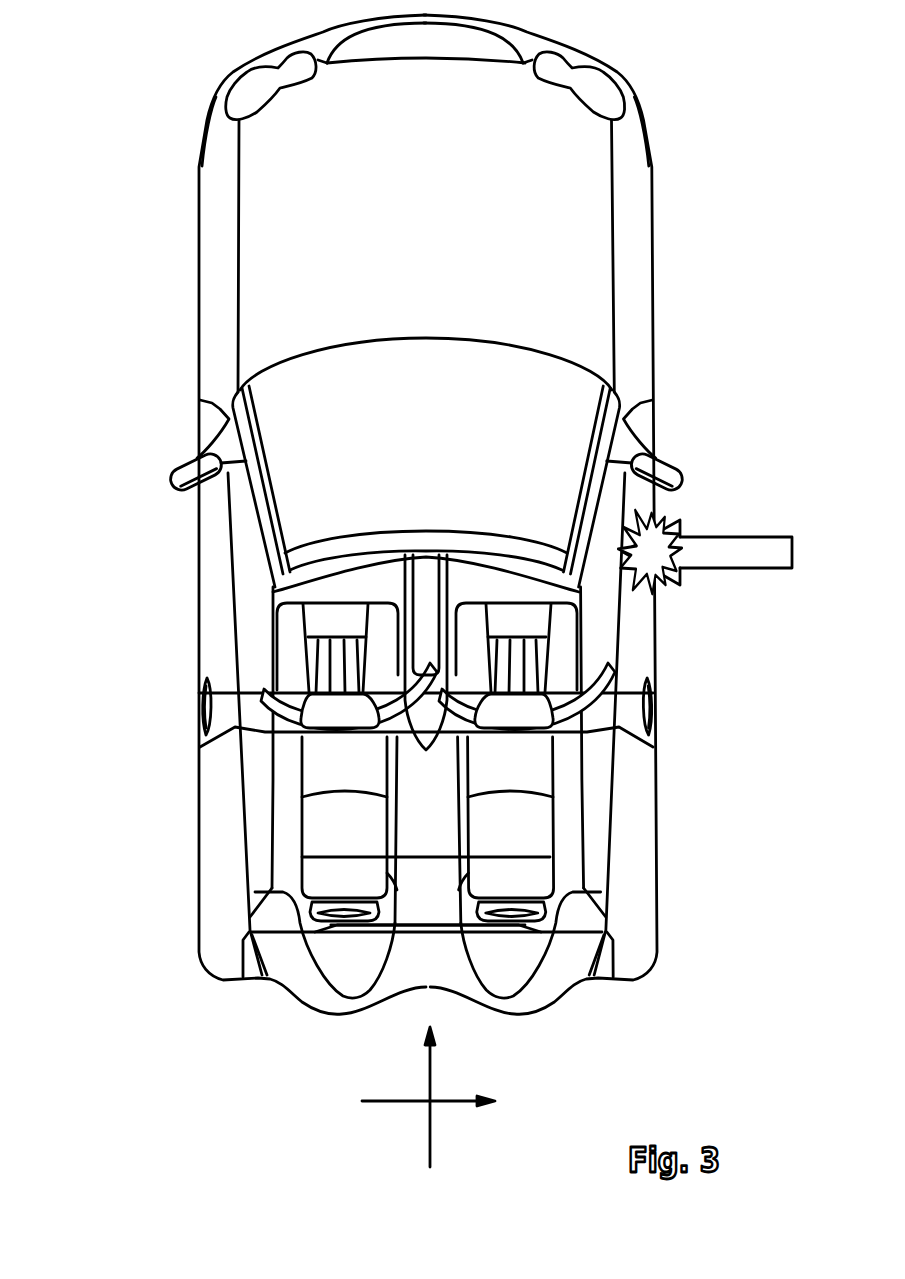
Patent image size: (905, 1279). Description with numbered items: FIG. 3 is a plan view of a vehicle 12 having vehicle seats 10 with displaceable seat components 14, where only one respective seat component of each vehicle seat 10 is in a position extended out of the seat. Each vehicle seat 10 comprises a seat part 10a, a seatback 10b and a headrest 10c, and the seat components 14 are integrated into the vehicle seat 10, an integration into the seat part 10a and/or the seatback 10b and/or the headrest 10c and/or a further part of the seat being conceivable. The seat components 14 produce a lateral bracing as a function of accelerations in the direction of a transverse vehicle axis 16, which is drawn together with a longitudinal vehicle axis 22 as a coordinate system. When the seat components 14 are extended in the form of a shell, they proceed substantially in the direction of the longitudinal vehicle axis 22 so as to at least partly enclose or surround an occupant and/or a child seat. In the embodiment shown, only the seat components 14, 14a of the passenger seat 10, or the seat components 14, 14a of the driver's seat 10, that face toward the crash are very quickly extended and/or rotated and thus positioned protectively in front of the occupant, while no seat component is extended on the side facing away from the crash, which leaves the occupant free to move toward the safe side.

The vehicle seat 10 is at (339, 575).
The seat part 10a is at (357, 612).
The seatback 10b is at (426, 669).
The headrest 10c is at (336, 722).
The vehicle 12 is at (163, 111).
The seat components 14 is at (426, 696).
The seat component 14a is at (262, 692).
The transverse vehicle axis 16 is at (379, 1103).
The longitudinal vehicle axis 22 is at (432, 1153).